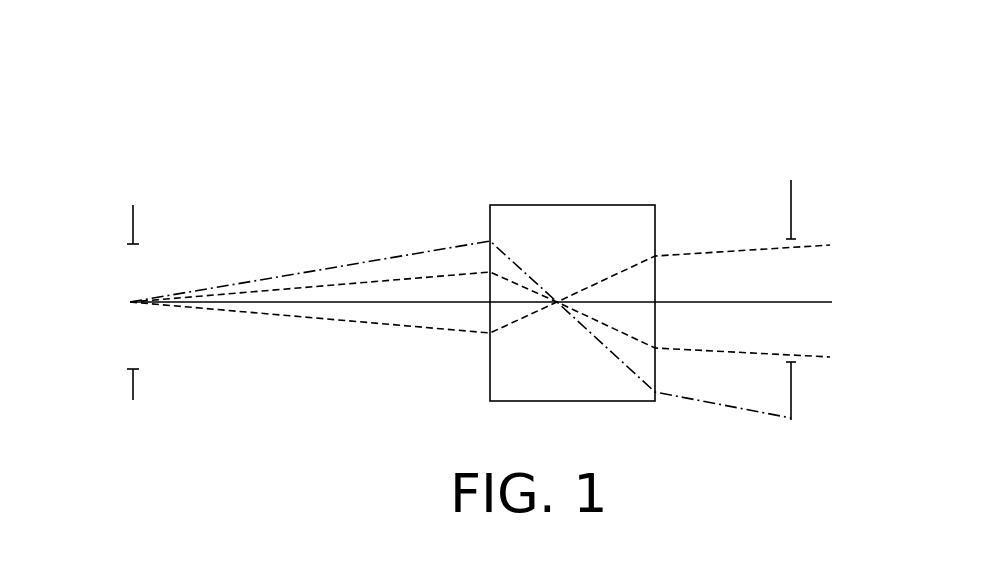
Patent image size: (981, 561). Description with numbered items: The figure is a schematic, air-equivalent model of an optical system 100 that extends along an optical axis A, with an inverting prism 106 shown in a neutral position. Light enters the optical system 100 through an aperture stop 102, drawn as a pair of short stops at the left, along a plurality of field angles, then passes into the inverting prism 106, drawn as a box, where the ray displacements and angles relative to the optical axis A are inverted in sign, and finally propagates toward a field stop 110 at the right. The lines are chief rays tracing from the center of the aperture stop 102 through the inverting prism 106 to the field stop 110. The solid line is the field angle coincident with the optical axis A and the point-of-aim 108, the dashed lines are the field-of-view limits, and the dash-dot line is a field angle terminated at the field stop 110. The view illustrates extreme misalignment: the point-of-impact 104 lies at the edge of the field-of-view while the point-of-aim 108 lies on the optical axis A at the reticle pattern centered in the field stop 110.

The optical system 100 is at (630, 95).
The aperture stop 102 is at (118, 244).
The point-of-impact 104 is at (435, 272).
The inverting prism 106 is at (548, 205).
The point-of-aim 108 is at (768, 303).
The optical axis A is at (815, 302).
The field stop 110 is at (800, 237).